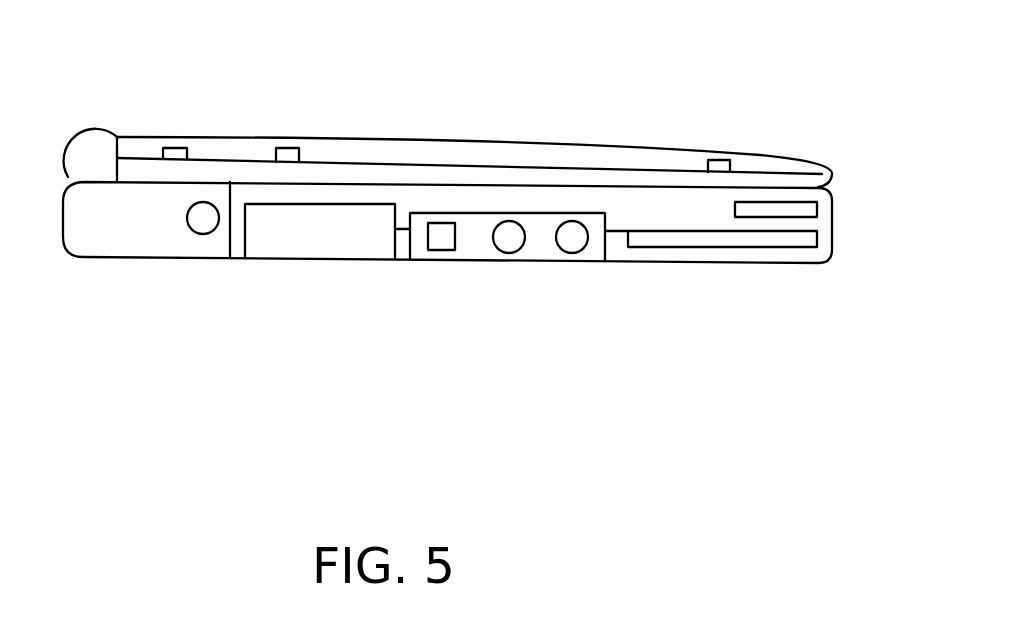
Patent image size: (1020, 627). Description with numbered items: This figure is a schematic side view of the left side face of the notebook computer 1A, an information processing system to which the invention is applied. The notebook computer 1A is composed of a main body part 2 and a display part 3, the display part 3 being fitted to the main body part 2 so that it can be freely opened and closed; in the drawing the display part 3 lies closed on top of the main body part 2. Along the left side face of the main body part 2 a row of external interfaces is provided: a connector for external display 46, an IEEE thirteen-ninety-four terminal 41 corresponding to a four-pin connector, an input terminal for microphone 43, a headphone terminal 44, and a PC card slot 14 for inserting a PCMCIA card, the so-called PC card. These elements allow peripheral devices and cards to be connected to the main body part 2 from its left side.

The notebook computer 1A is at (352, 90).
The main body part 2 is at (837, 228).
The display part 3 is at (483, 137).
The PC card slot 14 is at (692, 238).
The IEEE 1394 terminal 41 is at (443, 240).
The input terminal for microphone 43 is at (510, 242).
The headphone terminal 44 is at (572, 243).
The connector for external display 46 is at (322, 243).